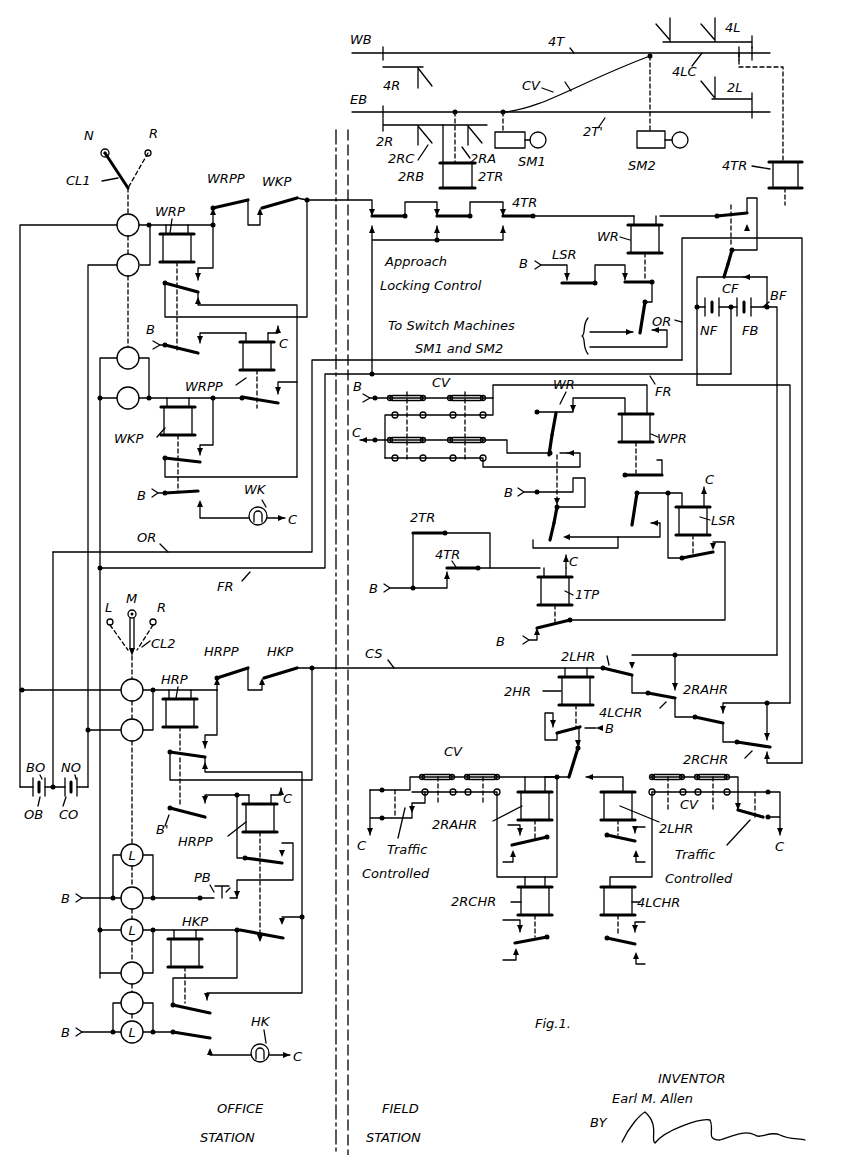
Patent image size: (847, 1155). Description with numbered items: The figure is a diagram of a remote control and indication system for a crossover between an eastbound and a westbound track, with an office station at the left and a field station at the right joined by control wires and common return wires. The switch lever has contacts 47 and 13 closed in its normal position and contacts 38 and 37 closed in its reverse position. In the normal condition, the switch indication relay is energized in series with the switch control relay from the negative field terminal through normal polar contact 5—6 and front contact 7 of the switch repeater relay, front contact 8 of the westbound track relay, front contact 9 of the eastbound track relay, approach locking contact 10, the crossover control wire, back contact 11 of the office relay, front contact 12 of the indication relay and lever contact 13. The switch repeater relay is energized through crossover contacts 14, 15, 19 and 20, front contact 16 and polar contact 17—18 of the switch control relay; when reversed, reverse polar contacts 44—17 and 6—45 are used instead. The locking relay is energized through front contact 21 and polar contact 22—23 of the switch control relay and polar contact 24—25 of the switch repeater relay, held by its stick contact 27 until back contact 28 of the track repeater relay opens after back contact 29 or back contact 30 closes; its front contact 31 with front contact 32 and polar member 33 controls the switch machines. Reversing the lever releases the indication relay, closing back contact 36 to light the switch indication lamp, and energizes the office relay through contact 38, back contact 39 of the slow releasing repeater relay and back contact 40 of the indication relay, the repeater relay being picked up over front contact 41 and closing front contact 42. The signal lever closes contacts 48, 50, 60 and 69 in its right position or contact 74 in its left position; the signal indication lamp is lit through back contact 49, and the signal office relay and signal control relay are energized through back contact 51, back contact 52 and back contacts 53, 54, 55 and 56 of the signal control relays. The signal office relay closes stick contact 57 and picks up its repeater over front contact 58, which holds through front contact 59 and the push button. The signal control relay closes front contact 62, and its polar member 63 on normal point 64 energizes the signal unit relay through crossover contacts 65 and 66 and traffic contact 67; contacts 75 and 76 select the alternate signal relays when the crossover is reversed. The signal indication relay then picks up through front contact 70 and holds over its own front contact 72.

The normal polar contact 5 is at (721, 274).
The polar contact member 6 is at (724, 255).
The front contact 7 is at (719, 213).
The front contact 8 is at (522, 221).
The front contact 9 is at (455, 221).
The contact 10 is at (390, 208).
The back contact 11 is at (198, 293).
The front contact 12 is at (201, 462).
The contact 13 is at (118, 354).
The contact 14 is at (405, 389).
The contact 15 is at (467, 389).
The front contact 16 is at (568, 408).
The polar contact member 17 is at (555, 430).
The normal polar contact 18 is at (550, 447).
The contact 19 is at (473, 443).
The contact 20 is at (408, 443).
The front contact 21 is at (545, 486).
The normal polar contact 22 is at (553, 513).
The normal polar contact 23 is at (552, 531).
The normal polar contact 24 is at (630, 513).
The normal polar contact 25 is at (632, 493).
The front contact 27 is at (705, 558).
The back contact 28 is at (535, 623).
The back contact 29 is at (410, 534).
The back contact 30 is at (468, 574).
The front contact 31 is at (578, 287).
The front contact 32 is at (648, 273).
The polar contact member 33 is at (642, 308).
The back contact 36 is at (202, 491).
The contact 37 is at (120, 408).
The contact 38 is at (117, 262).
The back contact 39 is at (224, 201).
The back contact 40 is at (282, 208).
The front contact 41 is at (184, 356).
The front contact 42 is at (266, 405).
The reverse polar contact 44 is at (574, 451).
The reverse polar contact 45 is at (755, 269).
The contact 47 is at (117, 222).
The contact 48 is at (121, 1003).
The back contact 49 is at (206, 1039).
The contact 50 is at (123, 725).
The back contact 51 is at (237, 678).
The back contact 52 is at (284, 679).
The back contact 53 is at (620, 679).
The back contact 54 is at (661, 686).
The back contact 55 is at (704, 712).
The back contact 56 is at (751, 736).
The front contact 57 is at (209, 757).
The front contact 58 is at (206, 814).
The front contact 59 is at (253, 866).
The contact 60 is at (145, 904).
The front contact 62 is at (577, 721).
The polar contact member 63 is at (584, 759).
The normal polar contact 64 is at (552, 769).
The contact 65 is at (482, 769).
The contact 66 is at (435, 769).
The contact 67 is at (388, 786).
The contact 69 is at (121, 978).
The front contact 70 is at (279, 940).
The front contact 72 is at (208, 1013).
The contact 74 is at (124, 682).
The contact 75 is at (664, 770).
The contact 76 is at (733, 783).